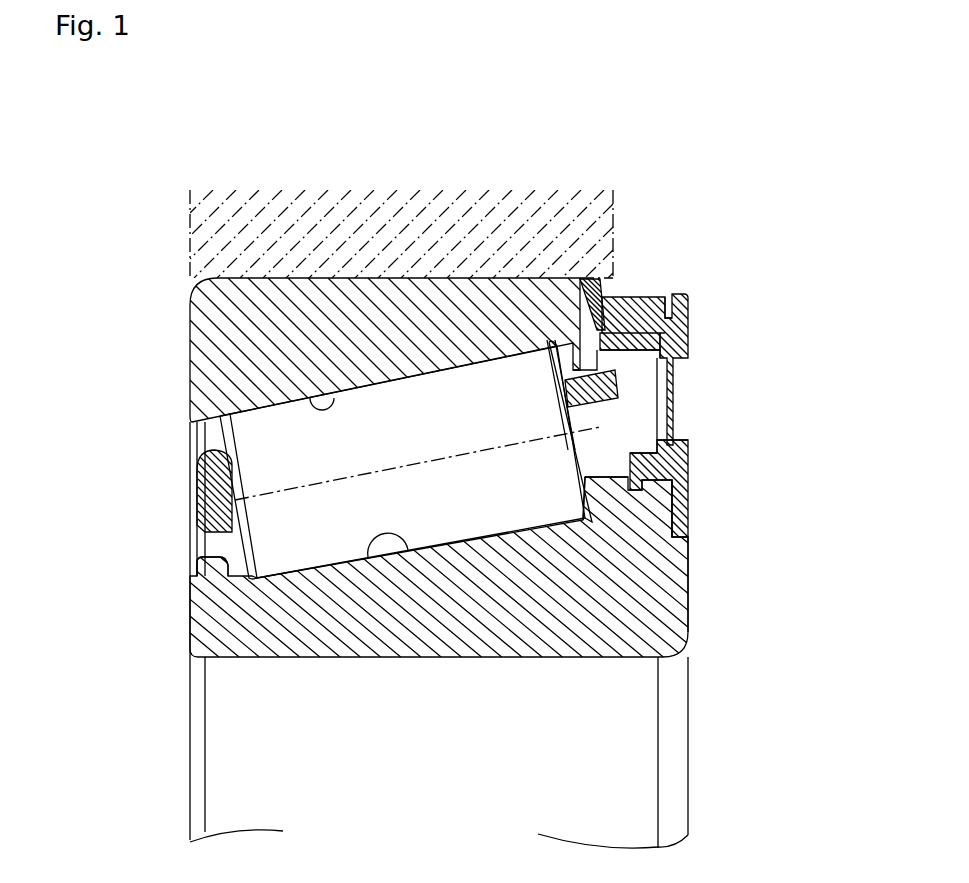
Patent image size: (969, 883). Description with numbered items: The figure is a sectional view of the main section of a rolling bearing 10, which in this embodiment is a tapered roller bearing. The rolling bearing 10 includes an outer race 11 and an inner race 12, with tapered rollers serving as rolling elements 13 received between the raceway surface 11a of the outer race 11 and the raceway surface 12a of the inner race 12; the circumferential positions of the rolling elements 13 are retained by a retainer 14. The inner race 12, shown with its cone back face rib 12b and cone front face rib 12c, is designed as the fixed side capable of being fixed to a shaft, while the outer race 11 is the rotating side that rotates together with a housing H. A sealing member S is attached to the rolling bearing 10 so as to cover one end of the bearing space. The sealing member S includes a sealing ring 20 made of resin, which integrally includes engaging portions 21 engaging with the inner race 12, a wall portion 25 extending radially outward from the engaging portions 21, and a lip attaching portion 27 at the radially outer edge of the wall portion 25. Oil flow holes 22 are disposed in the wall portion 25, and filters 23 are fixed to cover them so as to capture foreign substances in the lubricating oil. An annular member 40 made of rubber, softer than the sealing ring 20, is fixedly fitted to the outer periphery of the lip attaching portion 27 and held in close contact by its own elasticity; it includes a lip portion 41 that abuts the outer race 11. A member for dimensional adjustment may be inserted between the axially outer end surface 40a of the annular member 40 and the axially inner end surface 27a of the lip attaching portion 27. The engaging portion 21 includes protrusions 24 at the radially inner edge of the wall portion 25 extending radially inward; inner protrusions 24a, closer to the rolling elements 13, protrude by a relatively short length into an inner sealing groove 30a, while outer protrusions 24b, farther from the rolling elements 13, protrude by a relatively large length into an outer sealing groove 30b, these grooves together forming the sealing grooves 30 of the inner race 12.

The rolling bearing 10 is at (444, 483).
The outer race 11 is at (367, 288).
The raceway surface 11a is at (331, 397).
The inner race 12 is at (444, 589).
The raceway surface 12a is at (387, 542).
The cone back face rib 12b is at (587, 494).
The cone front face rib 12c is at (203, 558).
The rolling element 13 is at (438, 518).
The retainer 14 is at (198, 466).
The sealing ring 20 is at (444, 576).
The engaging portions 21 is at (444, 589).
The oil flow holes 22 is at (658, 382).
The filters 23 is at (657, 412).
The protrusions 24 is at (699, 559).
The inner protrusions 24a is at (688, 587).
The outer protrusions 24b is at (688, 510).
The wall portion 25 is at (688, 348).
The lip attaching portion 27 is at (643, 327).
The inner end surface 27a is at (667, 297).
The sealing grooves 30 is at (722, 456).
The inner sealing groove 30a is at (682, 438).
The outer sealing groove 30b is at (690, 490).
The annular member 40 is at (636, 299).
The outer end surface 40a is at (688, 316).
The lip portion 41 is at (594, 291).
The housing H is at (523, 226).
The sealing member S is at (639, 329).